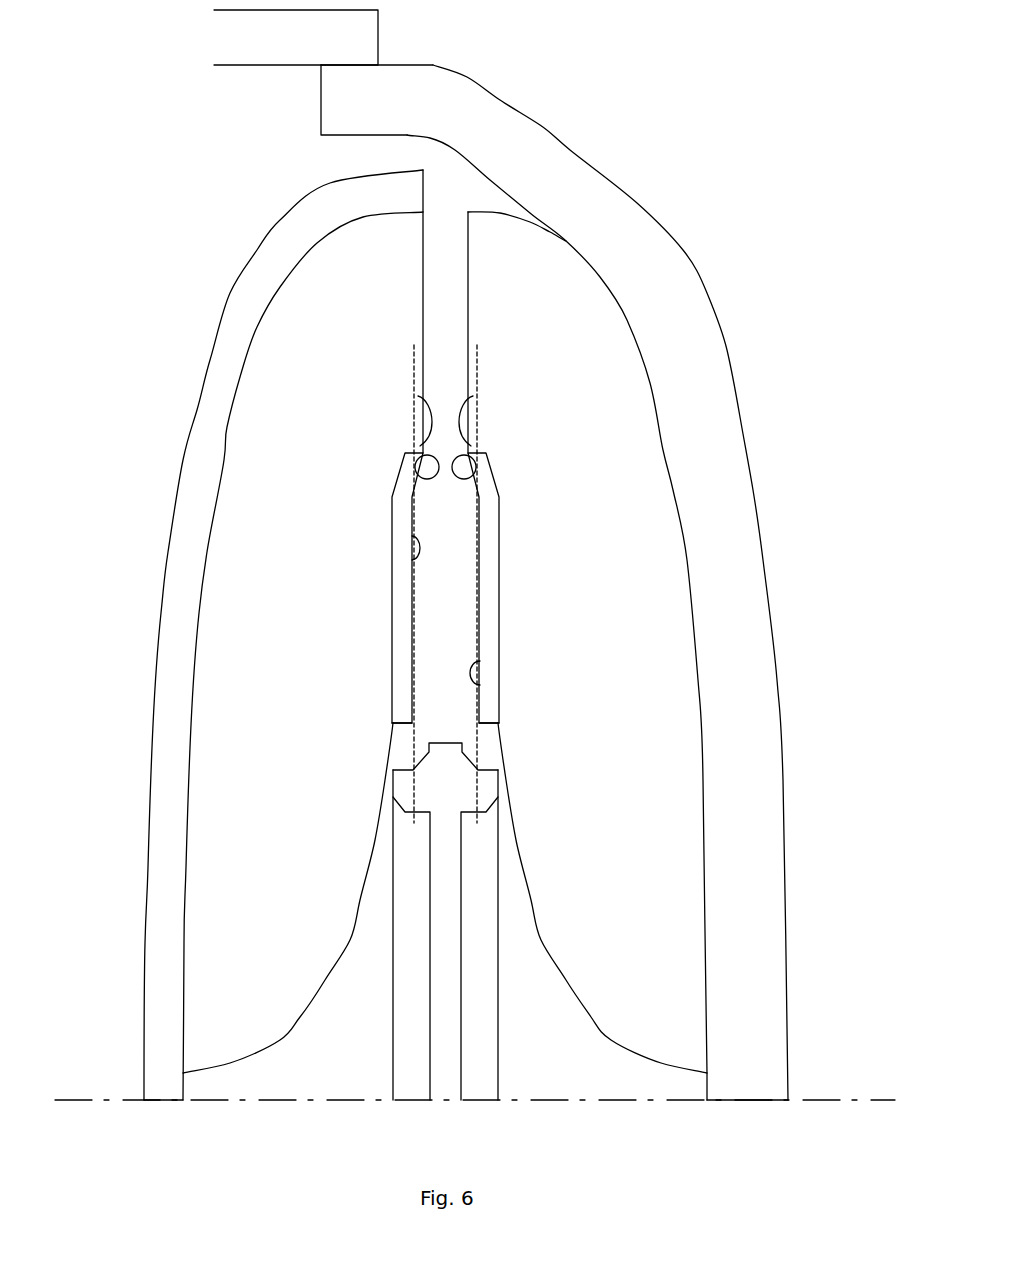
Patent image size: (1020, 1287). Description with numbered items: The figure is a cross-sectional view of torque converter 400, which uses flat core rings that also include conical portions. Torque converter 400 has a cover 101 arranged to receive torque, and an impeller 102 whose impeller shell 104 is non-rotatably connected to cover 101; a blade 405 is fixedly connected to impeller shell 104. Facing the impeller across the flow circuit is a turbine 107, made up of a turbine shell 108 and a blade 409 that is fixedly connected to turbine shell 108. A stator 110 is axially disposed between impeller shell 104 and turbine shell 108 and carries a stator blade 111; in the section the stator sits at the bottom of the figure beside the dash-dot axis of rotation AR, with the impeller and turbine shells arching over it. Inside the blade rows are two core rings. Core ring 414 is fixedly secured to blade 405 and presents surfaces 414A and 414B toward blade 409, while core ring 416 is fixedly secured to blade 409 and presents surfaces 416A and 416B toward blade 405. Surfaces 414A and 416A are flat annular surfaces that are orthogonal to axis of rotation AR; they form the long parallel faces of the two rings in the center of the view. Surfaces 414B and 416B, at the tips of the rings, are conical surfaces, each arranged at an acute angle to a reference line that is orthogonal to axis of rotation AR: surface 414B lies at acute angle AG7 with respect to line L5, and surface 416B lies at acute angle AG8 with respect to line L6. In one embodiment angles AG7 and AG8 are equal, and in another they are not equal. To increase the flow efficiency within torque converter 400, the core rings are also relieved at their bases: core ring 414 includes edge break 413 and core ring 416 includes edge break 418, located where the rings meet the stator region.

The torque converter 400 is at (184, 89).
The cover 101 is at (390, 38).
The impeller shell 104 is at (678, 241).
The impeller 102 is at (594, 582).
The turbine 107 is at (234, 635).
The turbine shell 108 is at (195, 362).
The blade 409 is at (362, 319).
The blade 405 is at (563, 319).
The line L6 is at (414, 368).
The line L5 is at (477, 368).
The acute angle AG8 is at (418, 396).
The acute angle AG7 is at (473, 396).
The core ring 416 is at (380, 645).
The core ring 414 is at (495, 620).
The conical surface 416B is at (413, 447).
The conical surface 414B is at (456, 440).
The flat annular surface 416A is at (412, 536).
The flat annular surface 414A is at (480, 661).
The edge break 418 is at (383, 724).
The edge break 413 is at (508, 726).
The stator 110 is at (367, 899).
The stator blade 111 is at (382, 981).
The axis of rotation AR is at (822, 1100).